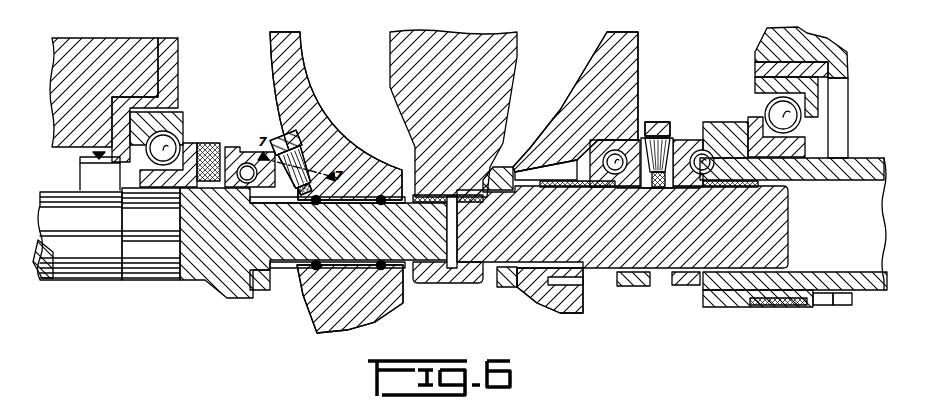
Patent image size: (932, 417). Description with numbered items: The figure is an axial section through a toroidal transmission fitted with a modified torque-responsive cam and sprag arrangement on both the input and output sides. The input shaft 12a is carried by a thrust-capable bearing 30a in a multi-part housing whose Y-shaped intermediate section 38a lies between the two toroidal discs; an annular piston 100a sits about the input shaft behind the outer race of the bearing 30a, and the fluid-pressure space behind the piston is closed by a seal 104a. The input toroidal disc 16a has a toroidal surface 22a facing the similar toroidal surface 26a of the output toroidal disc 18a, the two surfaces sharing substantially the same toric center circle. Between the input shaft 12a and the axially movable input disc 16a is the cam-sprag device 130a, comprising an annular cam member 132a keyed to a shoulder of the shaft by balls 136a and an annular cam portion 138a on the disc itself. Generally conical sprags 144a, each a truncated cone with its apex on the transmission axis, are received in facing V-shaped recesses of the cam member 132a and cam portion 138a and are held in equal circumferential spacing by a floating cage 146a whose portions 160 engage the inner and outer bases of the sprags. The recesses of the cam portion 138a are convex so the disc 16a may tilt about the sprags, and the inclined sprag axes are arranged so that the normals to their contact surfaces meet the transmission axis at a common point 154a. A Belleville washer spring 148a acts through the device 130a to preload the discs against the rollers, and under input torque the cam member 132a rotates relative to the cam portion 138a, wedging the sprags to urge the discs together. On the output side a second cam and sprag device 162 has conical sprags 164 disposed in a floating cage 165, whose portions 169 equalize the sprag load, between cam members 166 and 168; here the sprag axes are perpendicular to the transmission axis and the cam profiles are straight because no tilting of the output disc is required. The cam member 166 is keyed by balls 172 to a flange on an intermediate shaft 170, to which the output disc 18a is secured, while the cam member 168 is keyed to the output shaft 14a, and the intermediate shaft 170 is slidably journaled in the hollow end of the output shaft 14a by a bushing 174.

The input shaft 12a is at (108, 240).
The output shaft 14a is at (873, 173).
The input toroidal disc 16a is at (293, 50).
The output toroidal disc 18a is at (612, 47).
The toroidal surface 22a is at (308, 67).
The toroidal surface 26a is at (600, 80).
The bearing 30a is at (128, 200).
The intermediate housing section 38a is at (480, 86).
The annular piston 100a is at (178, 67).
The seal 104a is at (80, 162).
The cam-sprag device 130a is at (290, 125).
The cam member 132a is at (245, 160).
The ball 136a is at (200, 192).
The cam portion 138a is at (310, 180).
The conical sprag 144a is at (288, 203).
The floating cage 146a is at (315, 155).
The Belleville washer spring 148a is at (200, 140).
The intersection point 154a is at (458, 228).
The cage portions 160 is at (295, 130).
The second cam and sprag device 162 is at (655, 120).
The conical sprag 164 is at (675, 140).
The floating cage 165 is at (665, 188).
The cam member 166 is at (633, 140).
The cam member 168 is at (703, 140).
The cage portions 169 is at (650, 122).
The intermediate shaft 170 is at (700, 231).
The ball 172 is at (708, 160).
The bushing 174 is at (735, 188).